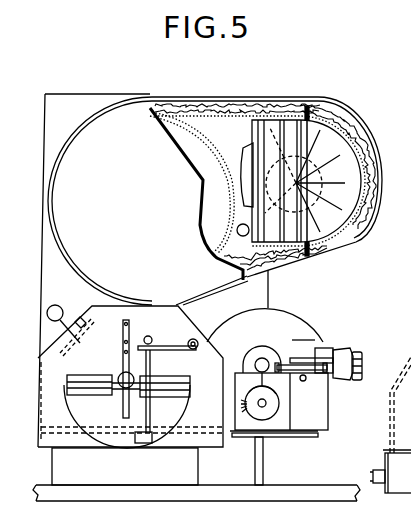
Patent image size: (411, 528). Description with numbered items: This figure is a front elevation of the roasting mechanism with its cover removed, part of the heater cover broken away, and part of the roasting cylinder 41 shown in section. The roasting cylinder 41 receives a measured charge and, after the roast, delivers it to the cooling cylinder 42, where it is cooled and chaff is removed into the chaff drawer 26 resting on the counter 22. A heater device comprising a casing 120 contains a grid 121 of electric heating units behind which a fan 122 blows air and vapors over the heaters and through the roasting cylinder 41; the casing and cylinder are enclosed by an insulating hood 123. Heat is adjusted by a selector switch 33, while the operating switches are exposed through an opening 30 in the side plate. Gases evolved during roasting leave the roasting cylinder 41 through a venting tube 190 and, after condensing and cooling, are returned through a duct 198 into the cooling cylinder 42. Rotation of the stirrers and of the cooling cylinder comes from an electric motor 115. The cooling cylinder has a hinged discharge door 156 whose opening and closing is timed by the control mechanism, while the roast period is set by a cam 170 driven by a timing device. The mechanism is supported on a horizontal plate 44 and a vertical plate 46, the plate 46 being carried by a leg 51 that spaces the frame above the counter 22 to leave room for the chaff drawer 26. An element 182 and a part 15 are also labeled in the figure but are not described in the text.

The casing 120 is at (343, 130).
The grid of electric heating units 121 is at (288, 155).
The fan 122 is at (340, 178).
The insulating hood 123 is at (370, 205).
The roasting cylinder 41 is at (197, 137).
The venting tube 190 is at (237, 231).
The plate 46 is at (262, 297).
The electric motor 115 is at (265, 325).
The cooling cylinder 42 is at (80, 316).
The duct 198 is at (50, 321).
The discharge door 156 is at (176, 412).
The opening 30 is at (329, 407).
The rod 182 is at (303, 366).
The selector switch 33 is at (348, 350).
The cam 170 is at (272, 412).
The plate 44 is at (300, 438).
The leg 51 is at (264, 468).
The counter 22 is at (68, 494).
The frame 15 is at (400, 405).
The drawer 26 is at (408, 487).